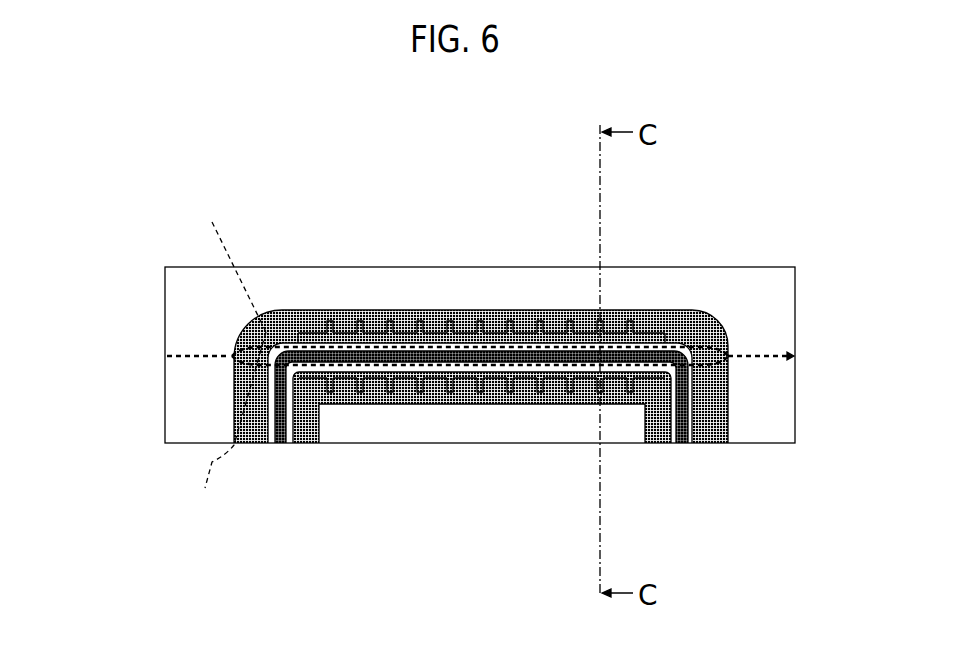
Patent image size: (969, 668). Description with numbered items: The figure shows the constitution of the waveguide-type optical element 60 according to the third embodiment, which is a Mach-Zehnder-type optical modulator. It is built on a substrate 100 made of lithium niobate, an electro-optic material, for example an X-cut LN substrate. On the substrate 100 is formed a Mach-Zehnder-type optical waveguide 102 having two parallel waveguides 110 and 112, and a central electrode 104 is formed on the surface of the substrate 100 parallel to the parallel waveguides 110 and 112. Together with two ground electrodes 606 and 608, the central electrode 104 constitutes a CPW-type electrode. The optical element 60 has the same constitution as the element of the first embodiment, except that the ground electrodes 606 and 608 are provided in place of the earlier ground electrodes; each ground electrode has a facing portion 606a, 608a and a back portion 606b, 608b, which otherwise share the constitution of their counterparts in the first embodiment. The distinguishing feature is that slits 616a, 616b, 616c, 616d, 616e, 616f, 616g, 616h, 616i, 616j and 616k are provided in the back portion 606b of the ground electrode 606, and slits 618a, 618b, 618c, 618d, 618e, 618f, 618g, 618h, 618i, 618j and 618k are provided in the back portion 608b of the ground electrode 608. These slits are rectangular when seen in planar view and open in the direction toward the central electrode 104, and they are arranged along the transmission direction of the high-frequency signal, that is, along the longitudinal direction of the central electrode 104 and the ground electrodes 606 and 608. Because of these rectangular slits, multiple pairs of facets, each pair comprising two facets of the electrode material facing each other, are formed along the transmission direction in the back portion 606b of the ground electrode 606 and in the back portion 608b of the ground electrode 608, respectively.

The waveguide-type optical element 60 is at (191, 179).
The substrate 100 is at (188, 283).
The Mach-Zehnder-type optical waveguide 102 is at (182, 354).
The central electrode 104 is at (298, 310).
The parallel waveguide 110 is at (225, 263).
The parallel waveguide 112 is at (224, 426).
The ground electrode 606 is at (758, 215).
The facing portion 606a is at (677, 312).
The back portion 606b is at (656, 335).
The ground electrode 608 is at (762, 502).
The facing portion 608a is at (678, 440).
The back portion 608b is at (667, 440).
The slit 616a is at (330, 322).
The slit 616b is at (360, 322).
The slit 616c is at (390, 322).
The slit 616d is at (420, 322).
The slit 616e is at (450, 322).
The slit 616f is at (480, 322).
The slit 616g is at (510, 322).
The slit 616h is at (540, 322).
The slit 616i is at (570, 322).
The slit 616j is at (600, 322).
The slit 616k is at (630, 322).
The slit 618a is at (330, 392).
The slit 618b is at (360, 392).
The slit 618c is at (390, 392).
The slit 618d is at (420, 392).
The slit 618e is at (450, 392).
The slit 618f is at (480, 392).
The slit 618g is at (510, 392).
The slit 618h is at (540, 392).
The slit 618i is at (570, 392).
The slit 618j is at (600, 392).
The slit 618k is at (630, 392).